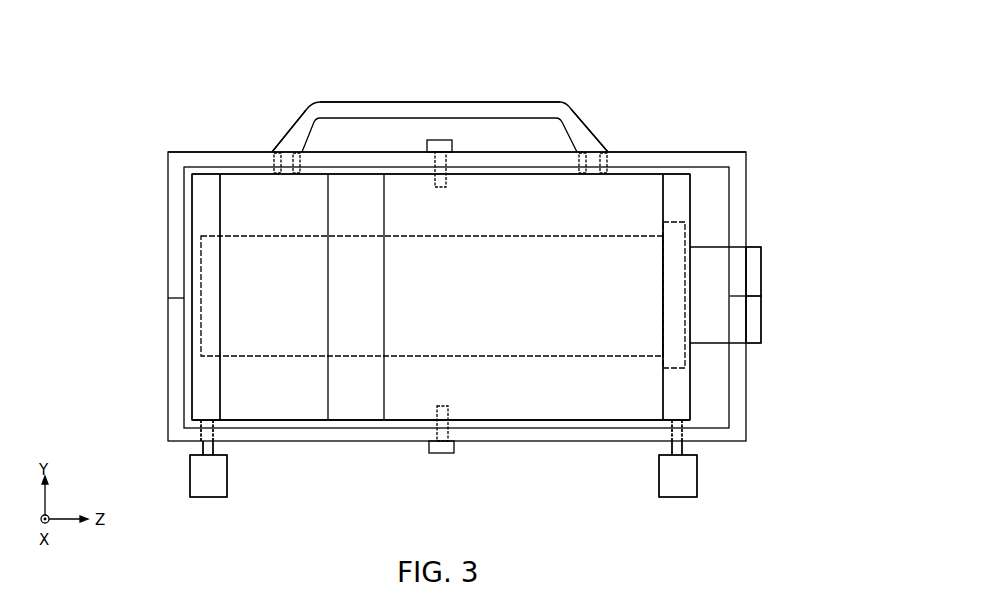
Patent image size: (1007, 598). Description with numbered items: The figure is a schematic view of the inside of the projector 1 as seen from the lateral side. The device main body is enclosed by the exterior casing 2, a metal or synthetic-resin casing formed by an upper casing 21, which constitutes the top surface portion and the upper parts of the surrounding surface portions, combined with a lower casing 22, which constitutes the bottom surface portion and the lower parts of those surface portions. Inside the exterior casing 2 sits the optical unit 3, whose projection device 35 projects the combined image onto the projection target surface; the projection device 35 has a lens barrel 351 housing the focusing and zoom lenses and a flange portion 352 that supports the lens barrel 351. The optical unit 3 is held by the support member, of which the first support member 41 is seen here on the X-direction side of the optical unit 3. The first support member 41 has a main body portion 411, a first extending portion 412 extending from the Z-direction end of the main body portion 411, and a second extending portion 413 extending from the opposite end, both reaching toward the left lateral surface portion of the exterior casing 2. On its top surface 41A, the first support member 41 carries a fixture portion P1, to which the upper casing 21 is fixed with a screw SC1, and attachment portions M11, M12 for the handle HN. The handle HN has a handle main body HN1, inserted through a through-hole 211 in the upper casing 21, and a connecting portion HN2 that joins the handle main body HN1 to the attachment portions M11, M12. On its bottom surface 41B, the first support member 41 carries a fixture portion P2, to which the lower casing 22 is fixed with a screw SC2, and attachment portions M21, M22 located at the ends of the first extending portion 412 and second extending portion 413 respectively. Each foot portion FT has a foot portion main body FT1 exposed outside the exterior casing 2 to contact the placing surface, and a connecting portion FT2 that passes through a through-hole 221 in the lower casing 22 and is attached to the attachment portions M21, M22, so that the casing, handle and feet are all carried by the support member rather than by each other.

The projector 1 is at (768, 56).
The exterior casing 2 is at (727, 151).
The upper casing 21 is at (746, 165).
The lower casing 22 is at (747, 378).
The through-hole 211 is at (296, 153).
The through-hole 221 is at (195, 452).
The optical unit 3 is at (683, 240).
The projection device 35 is at (812, 266).
The lens barrel 351 is at (760, 278).
The flange portion 352 is at (693, 318).
The first support member 41 is at (683, 382).
The top surface 41A is at (483, 173).
The bottom surface 41B is at (498, 422).
The main body portion 411 is at (560, 408).
The first extending portion 412 is at (682, 400).
The second extending portion 413 is at (200, 400).
The handle HN is at (570, 102).
The handle main body HN1 is at (552, 102).
The connecting portion HN2 is at (275, 173).
The attachment portion M11 is at (597, 170).
The attachment portion M12 is at (288, 173).
The attachment portion M21 is at (670, 427).
The attachment portion M22 is at (200, 432).
The fixture portion P1 is at (430, 172).
The fixture portion P2 is at (433, 422).
The screw SC1 is at (437, 140).
The screw SC2 is at (442, 453).
The foot portion FT is at (312, 460).
The foot portion main body FT1 is at (220, 478).
The connecting portion FT2 is at (213, 448).